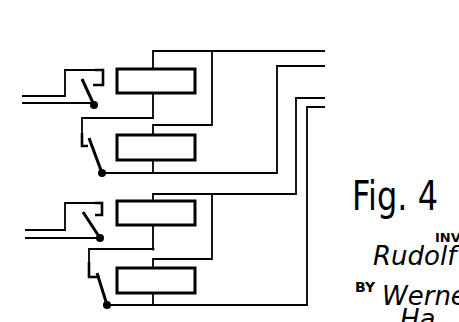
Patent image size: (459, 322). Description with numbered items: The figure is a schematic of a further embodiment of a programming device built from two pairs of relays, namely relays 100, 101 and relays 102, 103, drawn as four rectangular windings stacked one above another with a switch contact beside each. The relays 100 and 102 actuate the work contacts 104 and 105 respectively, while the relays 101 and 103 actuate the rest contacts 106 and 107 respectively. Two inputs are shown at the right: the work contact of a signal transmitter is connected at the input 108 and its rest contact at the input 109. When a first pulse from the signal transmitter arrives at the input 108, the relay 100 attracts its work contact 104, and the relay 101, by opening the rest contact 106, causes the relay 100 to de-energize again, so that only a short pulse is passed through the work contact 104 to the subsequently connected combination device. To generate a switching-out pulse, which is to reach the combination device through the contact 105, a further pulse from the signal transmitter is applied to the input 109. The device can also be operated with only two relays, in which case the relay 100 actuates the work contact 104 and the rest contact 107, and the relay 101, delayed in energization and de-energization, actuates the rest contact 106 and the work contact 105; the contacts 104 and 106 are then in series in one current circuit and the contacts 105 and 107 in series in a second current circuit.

The relay 100 is at (128, 70).
The relay 101 is at (195, 148).
The relay 102 is at (190, 215).
The relay 103 is at (195, 281).
The work contact 104 is at (88, 76).
The work contact 105 is at (75, 223).
The rest contact 106 is at (93, 157).
The rest contact 107 is at (100, 288).
The input 108 is at (333, 58).
The input 109 is at (332, 101).